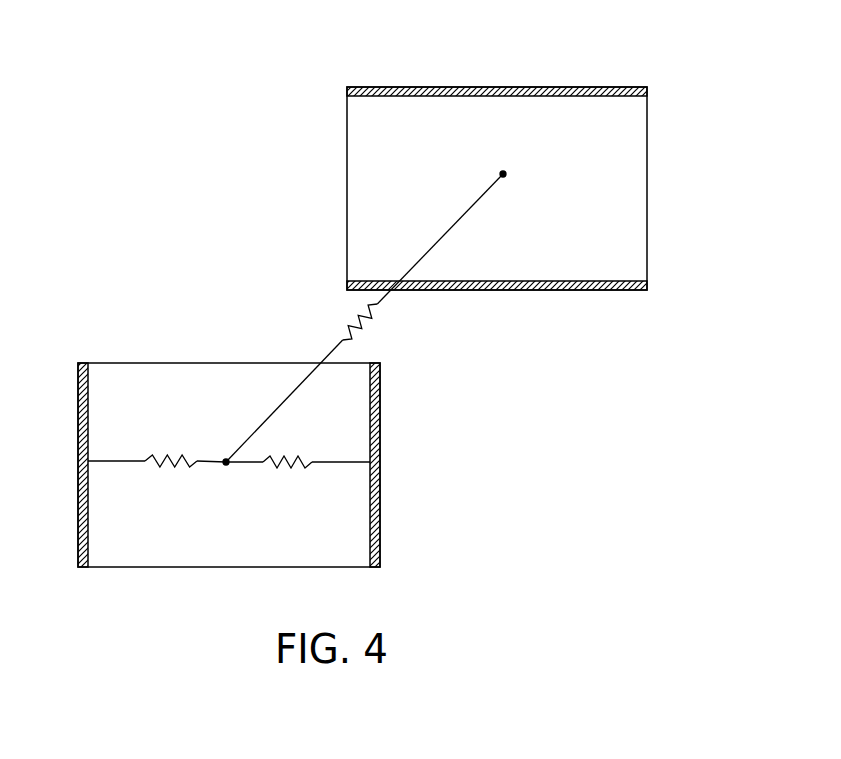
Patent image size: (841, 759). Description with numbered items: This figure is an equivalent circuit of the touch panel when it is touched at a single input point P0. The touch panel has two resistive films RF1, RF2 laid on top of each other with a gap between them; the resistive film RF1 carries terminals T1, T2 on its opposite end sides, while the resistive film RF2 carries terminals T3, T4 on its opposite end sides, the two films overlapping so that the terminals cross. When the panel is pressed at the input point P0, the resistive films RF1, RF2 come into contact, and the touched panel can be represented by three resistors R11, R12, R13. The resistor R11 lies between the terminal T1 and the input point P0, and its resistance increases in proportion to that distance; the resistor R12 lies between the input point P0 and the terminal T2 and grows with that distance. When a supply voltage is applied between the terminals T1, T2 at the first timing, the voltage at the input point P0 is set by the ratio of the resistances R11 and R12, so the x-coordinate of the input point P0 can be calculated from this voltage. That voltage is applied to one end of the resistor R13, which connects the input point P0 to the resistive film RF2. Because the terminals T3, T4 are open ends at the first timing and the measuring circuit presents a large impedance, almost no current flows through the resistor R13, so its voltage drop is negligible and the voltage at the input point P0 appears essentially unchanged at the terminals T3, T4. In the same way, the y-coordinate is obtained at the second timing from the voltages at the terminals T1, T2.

The resistive film RF1 is at (265, 570).
The resistive film RF2 is at (649, 243).
The terminal T1 is at (383, 530).
The terminal T2 is at (77, 505).
The terminal T3 is at (615, 86).
The terminal T4 is at (615, 293).
The resistor R11 is at (278, 468).
The resistor R12 is at (162, 478).
The resistor R13 is at (355, 334).
The input point P0 is at (227, 478).